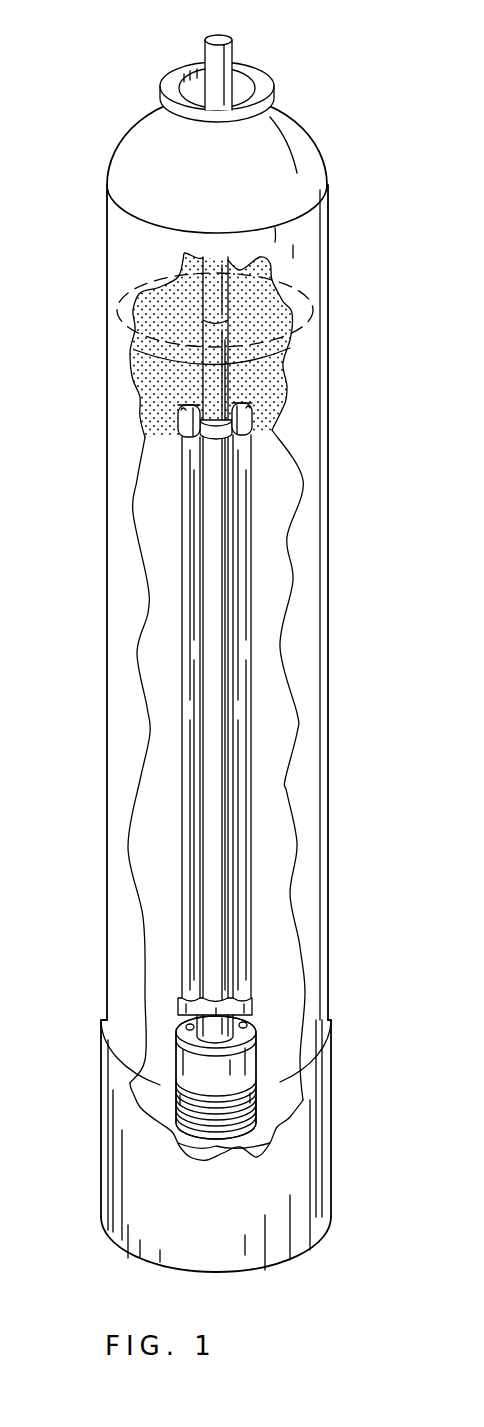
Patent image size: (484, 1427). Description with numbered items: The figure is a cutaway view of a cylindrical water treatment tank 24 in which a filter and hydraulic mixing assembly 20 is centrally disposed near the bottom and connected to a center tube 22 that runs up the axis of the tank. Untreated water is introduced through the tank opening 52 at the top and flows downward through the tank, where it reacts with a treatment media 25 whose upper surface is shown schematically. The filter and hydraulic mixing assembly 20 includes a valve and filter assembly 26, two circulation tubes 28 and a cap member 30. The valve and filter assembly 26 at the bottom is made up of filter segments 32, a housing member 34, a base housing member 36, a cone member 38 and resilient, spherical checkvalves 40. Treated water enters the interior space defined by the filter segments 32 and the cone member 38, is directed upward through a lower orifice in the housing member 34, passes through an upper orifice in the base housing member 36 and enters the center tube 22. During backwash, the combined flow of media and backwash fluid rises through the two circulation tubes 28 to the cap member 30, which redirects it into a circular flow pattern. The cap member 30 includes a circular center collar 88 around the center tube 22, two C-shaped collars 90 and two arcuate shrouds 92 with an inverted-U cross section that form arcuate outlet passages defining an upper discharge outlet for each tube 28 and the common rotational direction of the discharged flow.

The filter and hydraulic mixing assembly 20 is at (175, 996).
The center tube 22 is at (223, 53).
The water treatment tank 24 is at (108, 585).
The treatment media 25 is at (277, 340).
The valve and filter assembly 26 is at (211, 1069).
The circulation tubes 28 is at (185, 888).
The cap member 30 is at (178, 409).
The filter segments 32 is at (175, 1108).
The housing member 34 is at (257, 1070).
The base housing member 36 is at (255, 1046).
The cone member 38 is at (215, 1130).
The resilient spherical checkvalves 40 is at (186, 1026).
The tank opening 52 is at (242, 95).
The circular center collar 88 is at (223, 447).
The C-shaped collars 90 is at (178, 430).
The arcuate shrouds 92 is at (183, 383).